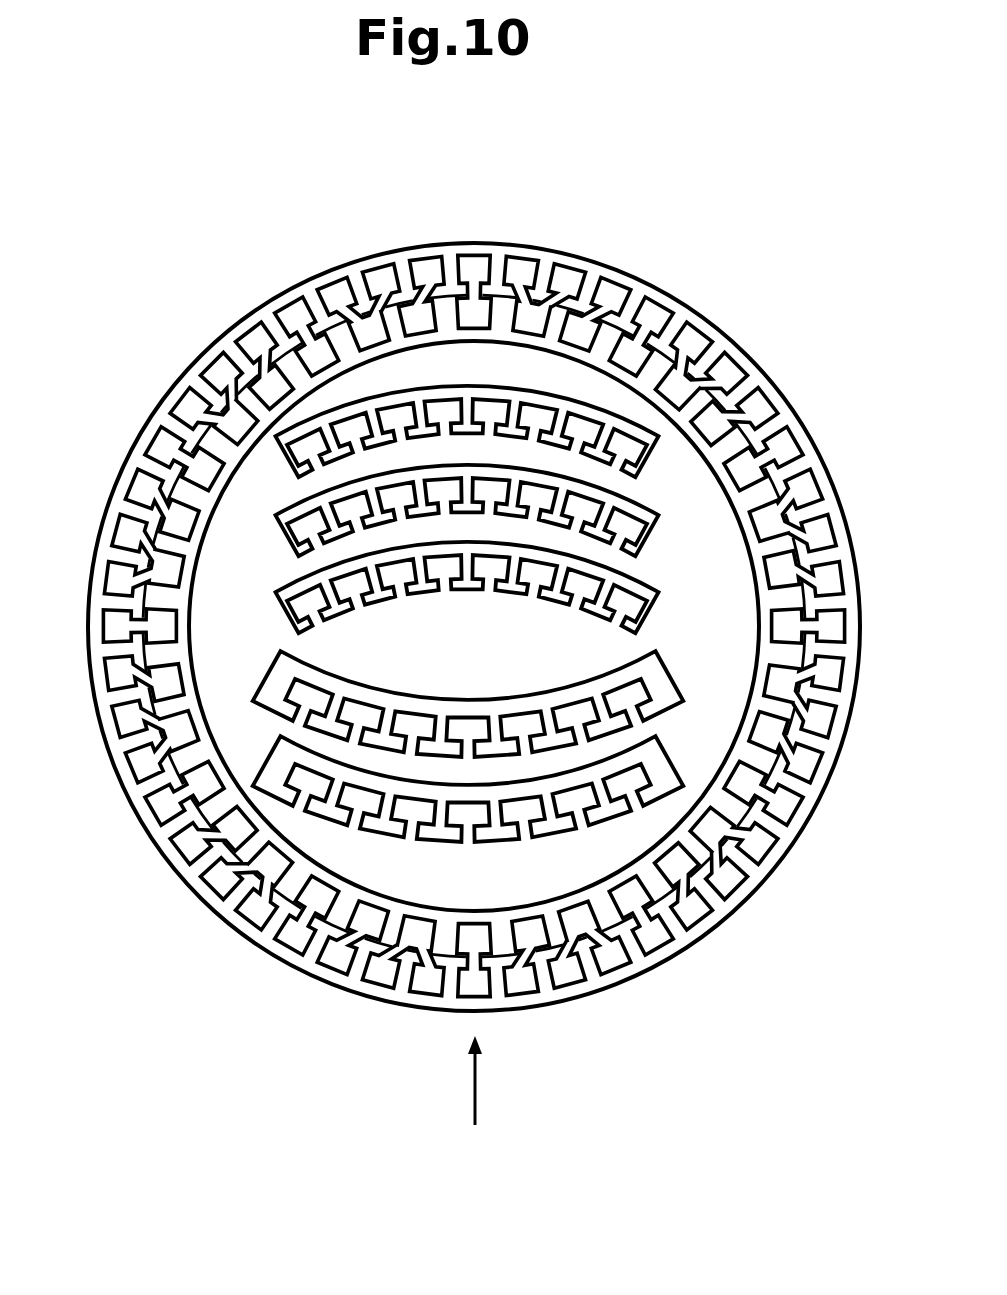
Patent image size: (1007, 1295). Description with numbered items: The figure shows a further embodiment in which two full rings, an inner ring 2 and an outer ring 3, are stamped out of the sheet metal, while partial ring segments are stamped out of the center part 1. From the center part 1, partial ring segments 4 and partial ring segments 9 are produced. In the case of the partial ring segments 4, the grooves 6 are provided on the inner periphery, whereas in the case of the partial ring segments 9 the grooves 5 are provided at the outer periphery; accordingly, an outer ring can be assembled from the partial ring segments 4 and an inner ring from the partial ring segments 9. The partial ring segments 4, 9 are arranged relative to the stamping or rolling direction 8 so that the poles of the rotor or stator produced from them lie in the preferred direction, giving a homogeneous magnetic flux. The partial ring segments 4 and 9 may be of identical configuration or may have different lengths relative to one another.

The center part 1 is at (213, 678).
The inner ring 2 is at (652, 518).
The outer ring 3 is at (673, 328).
The partial ring segments 4 is at (670, 428).
The grooves 5 is at (551, 624).
The grooves 6 is at (433, 418).
The stamping or rolling direction 8 is at (475, 1107).
The partial ring segments 9 is at (643, 663).